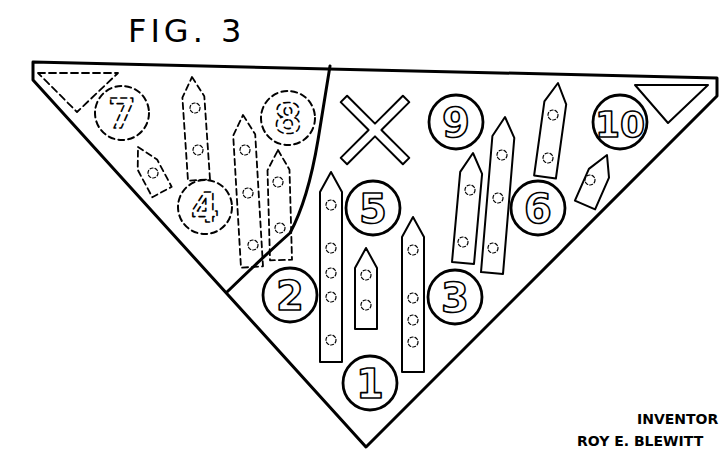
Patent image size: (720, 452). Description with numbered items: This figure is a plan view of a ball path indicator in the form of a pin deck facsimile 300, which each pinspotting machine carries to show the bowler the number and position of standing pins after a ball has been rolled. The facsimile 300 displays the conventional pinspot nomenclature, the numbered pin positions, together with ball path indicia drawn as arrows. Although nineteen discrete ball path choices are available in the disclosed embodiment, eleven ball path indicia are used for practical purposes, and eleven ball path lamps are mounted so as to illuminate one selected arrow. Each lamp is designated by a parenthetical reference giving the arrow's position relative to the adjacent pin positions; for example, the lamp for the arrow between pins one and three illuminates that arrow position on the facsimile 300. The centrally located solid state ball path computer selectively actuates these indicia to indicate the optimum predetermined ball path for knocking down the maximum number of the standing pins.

The pin deck facsimile 300 is at (518, 285).